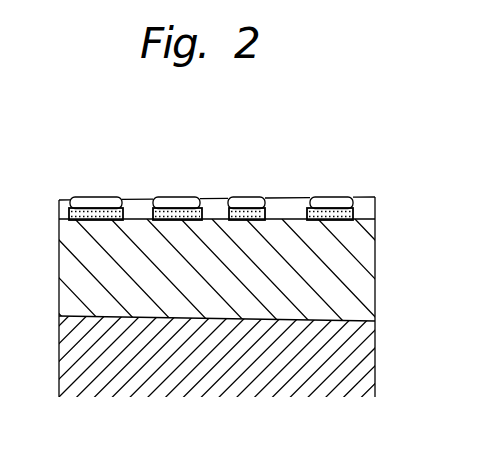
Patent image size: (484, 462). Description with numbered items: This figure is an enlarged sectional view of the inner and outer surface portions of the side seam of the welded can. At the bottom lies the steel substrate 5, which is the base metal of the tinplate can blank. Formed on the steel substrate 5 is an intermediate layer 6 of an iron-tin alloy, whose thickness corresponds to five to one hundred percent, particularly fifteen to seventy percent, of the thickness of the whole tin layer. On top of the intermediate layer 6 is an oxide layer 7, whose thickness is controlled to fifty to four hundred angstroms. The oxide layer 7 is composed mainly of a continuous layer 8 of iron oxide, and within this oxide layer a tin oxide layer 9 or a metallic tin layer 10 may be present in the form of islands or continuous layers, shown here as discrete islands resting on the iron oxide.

The steel substrate 5 is at (366, 361).
The intermediate layer 6 is at (366, 271).
The oxide layer 7 is at (229, 165).
The continuous layer of iron oxide 8 is at (215, 207).
The tin oxide layer 9 is at (99, 195).
The metallic tin layer 10 is at (177, 197).